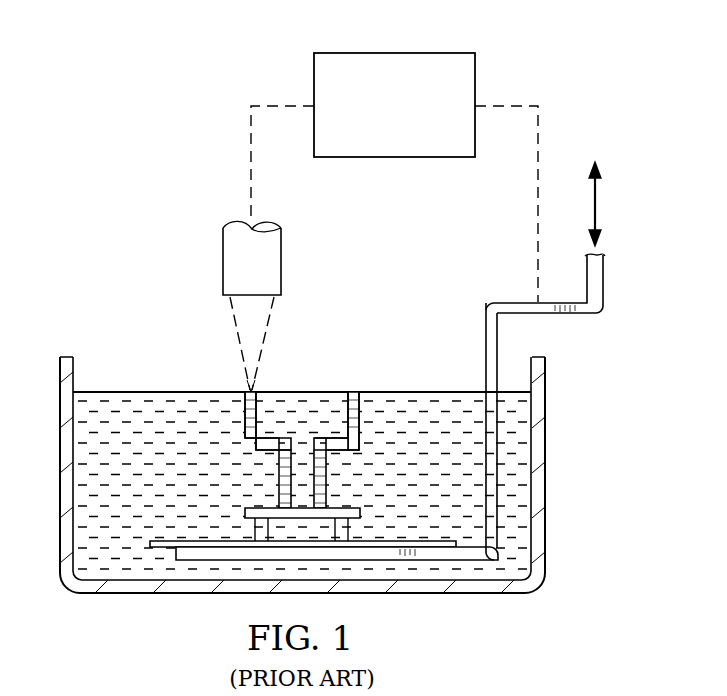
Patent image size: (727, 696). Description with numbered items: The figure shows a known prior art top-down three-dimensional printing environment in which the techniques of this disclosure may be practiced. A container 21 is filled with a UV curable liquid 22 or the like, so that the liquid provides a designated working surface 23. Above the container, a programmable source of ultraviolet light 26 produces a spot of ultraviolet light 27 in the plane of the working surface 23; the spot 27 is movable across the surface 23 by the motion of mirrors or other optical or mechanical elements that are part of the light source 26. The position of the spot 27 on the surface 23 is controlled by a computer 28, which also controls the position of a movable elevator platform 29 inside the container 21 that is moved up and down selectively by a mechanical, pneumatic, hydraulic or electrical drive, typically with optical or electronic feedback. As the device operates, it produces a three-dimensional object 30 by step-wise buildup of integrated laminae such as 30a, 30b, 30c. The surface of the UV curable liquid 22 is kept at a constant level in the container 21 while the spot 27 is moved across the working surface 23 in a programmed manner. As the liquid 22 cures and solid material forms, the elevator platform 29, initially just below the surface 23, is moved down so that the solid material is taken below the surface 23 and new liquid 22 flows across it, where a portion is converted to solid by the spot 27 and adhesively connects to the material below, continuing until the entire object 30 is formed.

The container 21 is at (70, 443).
The UV curable liquid 22 is at (139, 470).
The working surface 23 is at (143, 391).
The programmable source of ultraviolet light 26 is at (223, 263).
The spot of ultraviolet light 27 is at (278, 371).
The computer 28 is at (393, 53).
The movable elevator platform 29 is at (463, 551).
The three-dimensional object 30 is at (320, 436).
The integrated lamina 30a is at (360, 423).
The integrated lamina 30b is at (359, 432).
The integrated lamina 30c is at (345, 444).